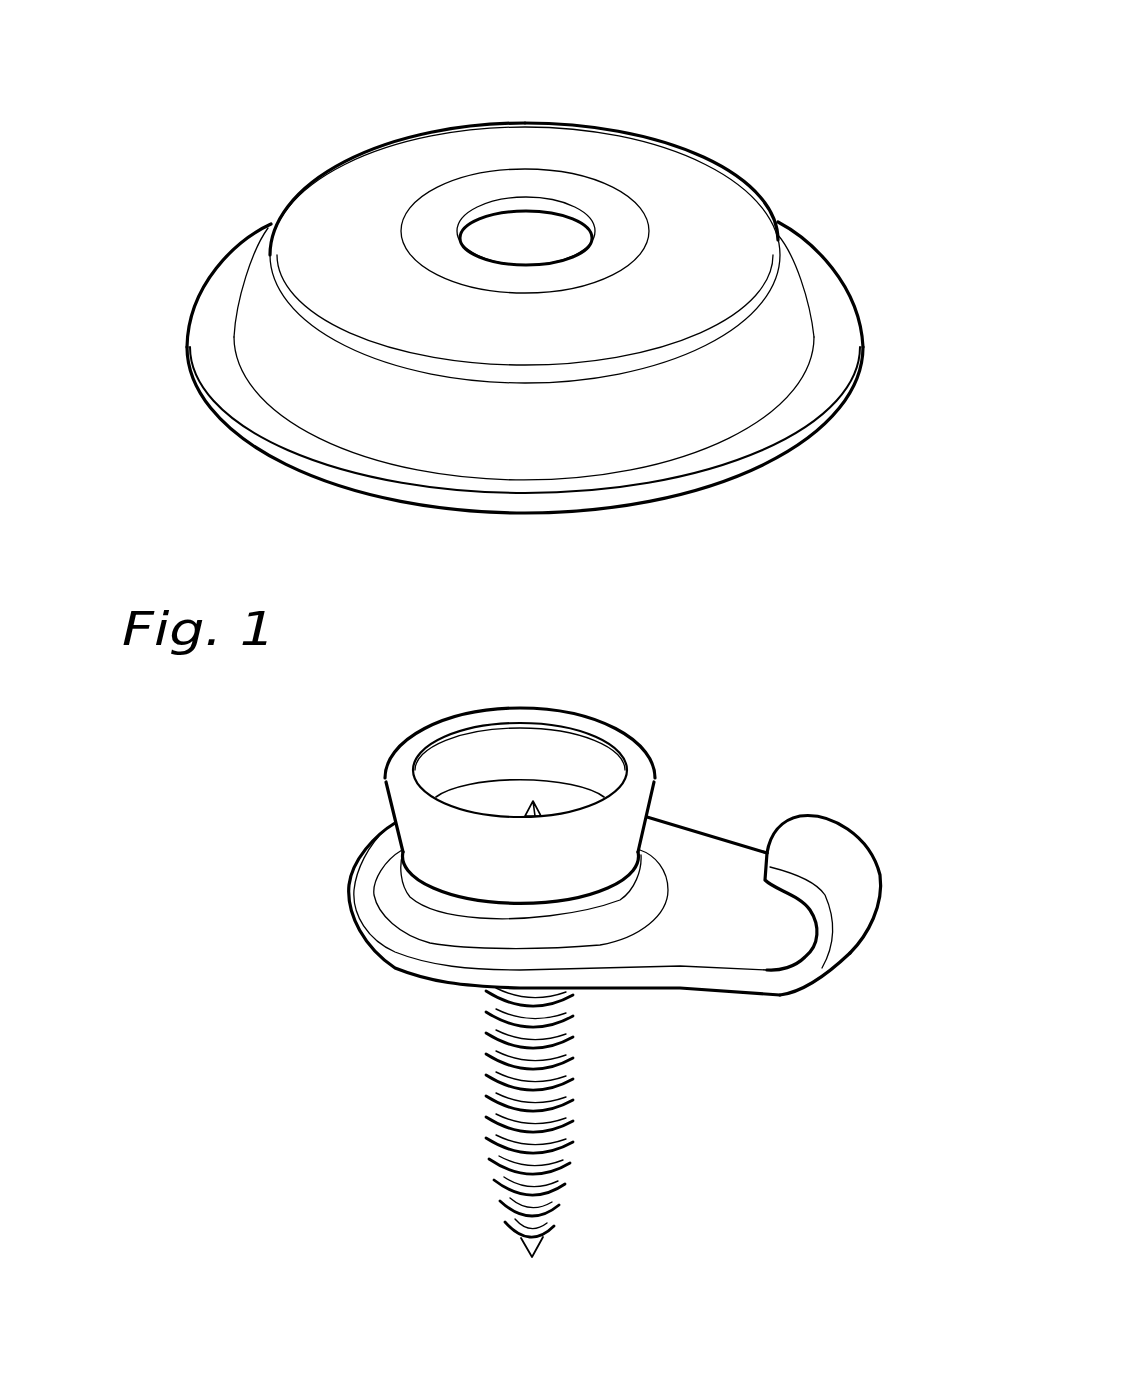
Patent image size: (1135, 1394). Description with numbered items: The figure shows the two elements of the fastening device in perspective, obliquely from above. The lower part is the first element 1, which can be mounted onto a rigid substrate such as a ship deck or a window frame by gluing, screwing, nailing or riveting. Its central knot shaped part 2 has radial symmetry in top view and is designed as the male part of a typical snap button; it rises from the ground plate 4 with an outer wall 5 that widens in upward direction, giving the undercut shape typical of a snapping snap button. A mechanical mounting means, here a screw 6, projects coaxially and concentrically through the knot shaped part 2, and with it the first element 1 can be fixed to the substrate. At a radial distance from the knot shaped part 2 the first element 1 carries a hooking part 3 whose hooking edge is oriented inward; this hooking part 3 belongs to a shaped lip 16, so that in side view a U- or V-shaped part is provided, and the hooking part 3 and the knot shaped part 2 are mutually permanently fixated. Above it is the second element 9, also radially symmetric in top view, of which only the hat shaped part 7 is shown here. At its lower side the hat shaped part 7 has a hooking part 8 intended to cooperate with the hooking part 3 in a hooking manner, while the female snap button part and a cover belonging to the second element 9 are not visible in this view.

The first element 1 is at (491, 952).
The knot shaped part 2 is at (505, 775).
The hooking part 3 is at (823, 891).
The ground plate 4 is at (565, 891).
The outer wall 5 is at (385, 812).
The screw 6 is at (580, 1103).
The hat shaped part 7 is at (367, 123).
The hooking part 8 is at (175, 307).
The second element 9 is at (481, 262).
The shaped lip 16 is at (857, 968).